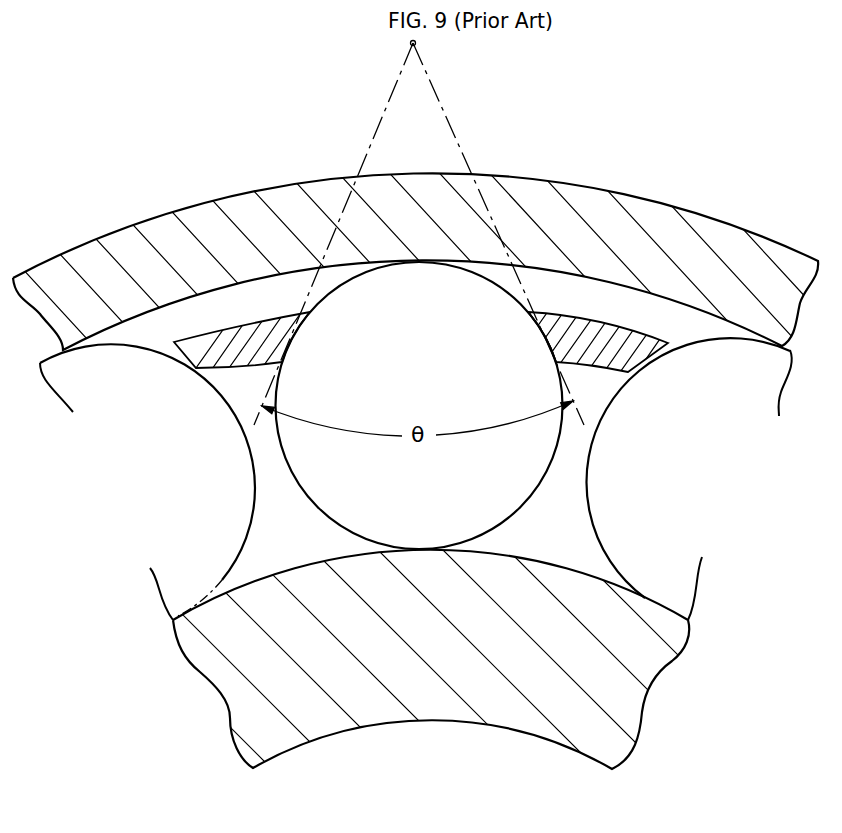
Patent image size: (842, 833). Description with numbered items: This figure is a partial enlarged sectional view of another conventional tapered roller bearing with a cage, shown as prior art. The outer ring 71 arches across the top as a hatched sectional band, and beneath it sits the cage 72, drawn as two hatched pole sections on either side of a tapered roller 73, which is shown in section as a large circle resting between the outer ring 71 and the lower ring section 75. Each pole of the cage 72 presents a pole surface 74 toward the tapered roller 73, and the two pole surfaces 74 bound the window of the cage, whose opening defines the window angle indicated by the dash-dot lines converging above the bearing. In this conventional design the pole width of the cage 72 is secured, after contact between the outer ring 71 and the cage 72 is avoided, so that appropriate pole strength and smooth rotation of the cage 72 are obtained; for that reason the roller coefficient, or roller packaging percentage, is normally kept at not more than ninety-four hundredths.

The outer ring 71 is at (653, 228).
The cage 72 is at (243, 342).
The tapered roller 73 is at (472, 295).
The pole surface 74 is at (540, 335).
The inner ring 75 is at (623, 695).